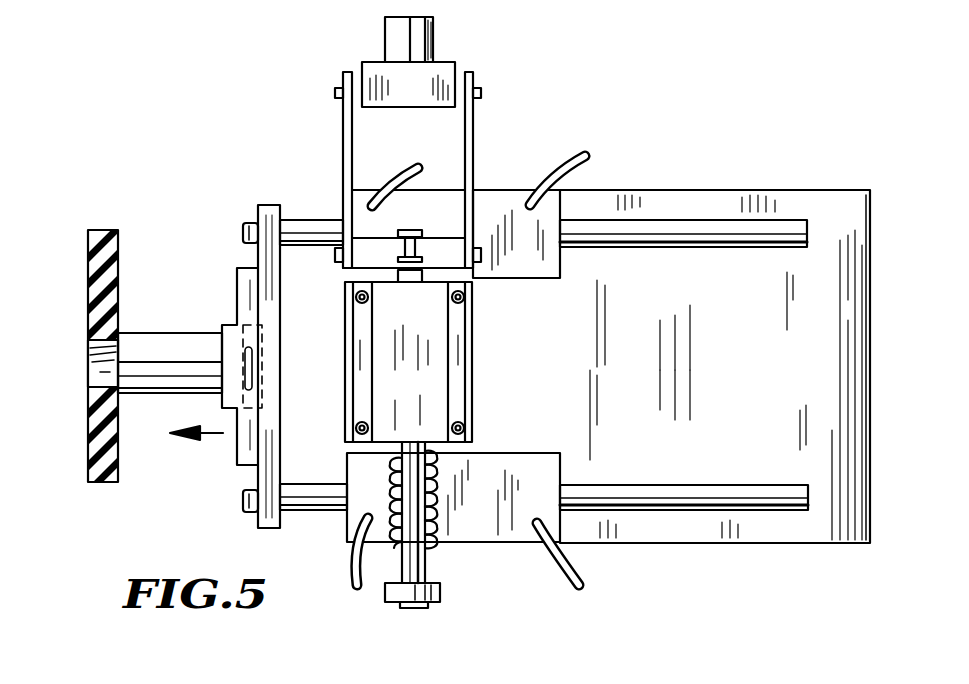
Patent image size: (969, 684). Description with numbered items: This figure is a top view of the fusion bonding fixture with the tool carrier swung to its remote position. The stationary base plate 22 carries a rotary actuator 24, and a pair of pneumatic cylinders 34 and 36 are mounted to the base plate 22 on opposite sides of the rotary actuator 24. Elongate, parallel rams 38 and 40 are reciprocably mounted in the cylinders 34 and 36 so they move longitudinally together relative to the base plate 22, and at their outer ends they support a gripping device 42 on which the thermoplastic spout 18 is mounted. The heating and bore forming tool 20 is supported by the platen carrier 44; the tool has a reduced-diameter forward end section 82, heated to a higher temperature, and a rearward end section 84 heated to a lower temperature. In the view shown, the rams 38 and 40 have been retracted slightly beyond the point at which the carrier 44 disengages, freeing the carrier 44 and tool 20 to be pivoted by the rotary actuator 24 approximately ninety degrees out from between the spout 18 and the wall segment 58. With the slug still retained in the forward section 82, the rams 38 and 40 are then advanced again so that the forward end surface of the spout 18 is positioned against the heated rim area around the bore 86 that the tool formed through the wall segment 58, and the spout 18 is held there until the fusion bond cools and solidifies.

The spout 18 is at (163, 394).
The heating and bore forming tool 20 is at (433, 35).
The base plate 22 is at (795, 380).
The rotary actuator 24 is at (442, 382).
The pneumatic cylinder 34 is at (543, 278).
The pneumatic cylinder 36 is at (536, 457).
The ram 38 is at (765, 248).
The ram 40 is at (690, 493).
The gripping device 42 is at (245, 291).
The platen carrier 44 is at (478, 133).
The wall segment 58 is at (88, 258).
The forward end section 82 is at (392, 25).
The rearward end section 84 is at (440, 85).
The bore 86 is at (88, 356).